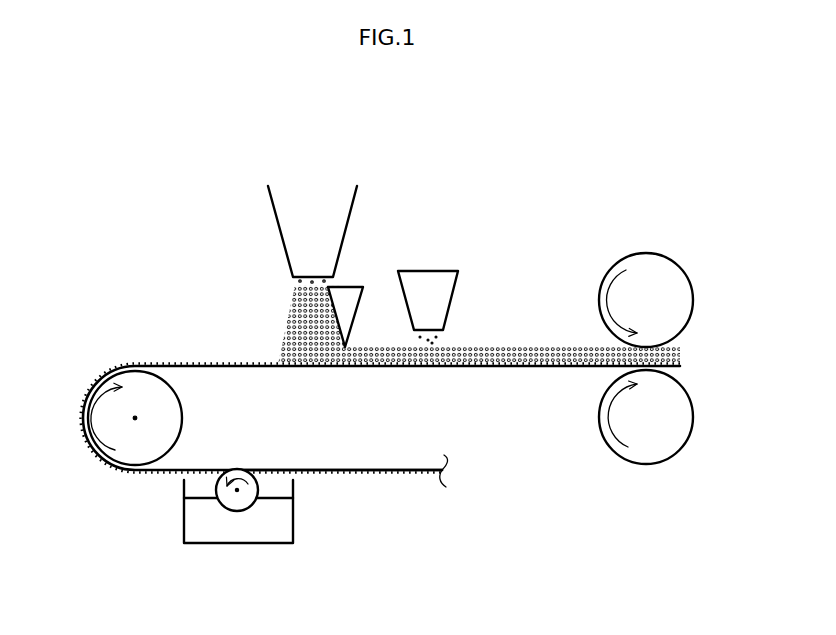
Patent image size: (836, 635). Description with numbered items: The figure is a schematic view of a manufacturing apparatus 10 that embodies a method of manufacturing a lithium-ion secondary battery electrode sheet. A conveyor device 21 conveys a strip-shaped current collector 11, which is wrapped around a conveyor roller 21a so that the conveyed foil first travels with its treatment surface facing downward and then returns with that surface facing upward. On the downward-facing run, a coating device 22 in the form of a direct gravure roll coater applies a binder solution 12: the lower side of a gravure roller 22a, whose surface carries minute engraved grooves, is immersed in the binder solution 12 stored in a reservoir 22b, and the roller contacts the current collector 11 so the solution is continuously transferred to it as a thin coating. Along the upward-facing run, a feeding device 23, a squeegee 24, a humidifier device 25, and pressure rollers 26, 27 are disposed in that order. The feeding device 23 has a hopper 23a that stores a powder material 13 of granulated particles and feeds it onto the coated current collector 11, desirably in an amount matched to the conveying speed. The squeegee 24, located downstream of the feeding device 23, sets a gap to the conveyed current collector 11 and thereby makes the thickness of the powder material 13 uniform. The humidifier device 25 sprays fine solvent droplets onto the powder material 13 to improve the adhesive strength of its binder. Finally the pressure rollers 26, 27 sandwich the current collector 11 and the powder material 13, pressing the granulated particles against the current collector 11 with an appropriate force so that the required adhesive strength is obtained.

The manufacturing apparatus 10 is at (140, 232).
The current collector 11 is at (357, 468).
The binder solution 12 is at (98, 478).
The powder material 13 is at (532, 330).
The conveyor device 21 is at (123, 352).
The conveyor roller 21a is at (181, 403).
The coating device 22 is at (312, 522).
The gravure roller 22a is at (257, 503).
The reservoir 22b is at (182, 520).
The feeding device 23 is at (253, 170).
The hopper 23a is at (278, 222).
The squeegee 24 is at (365, 300).
The humidifier device 25 is at (458, 288).
The pressure roller 26 is at (695, 298).
The pressure roller 27 is at (693, 412).